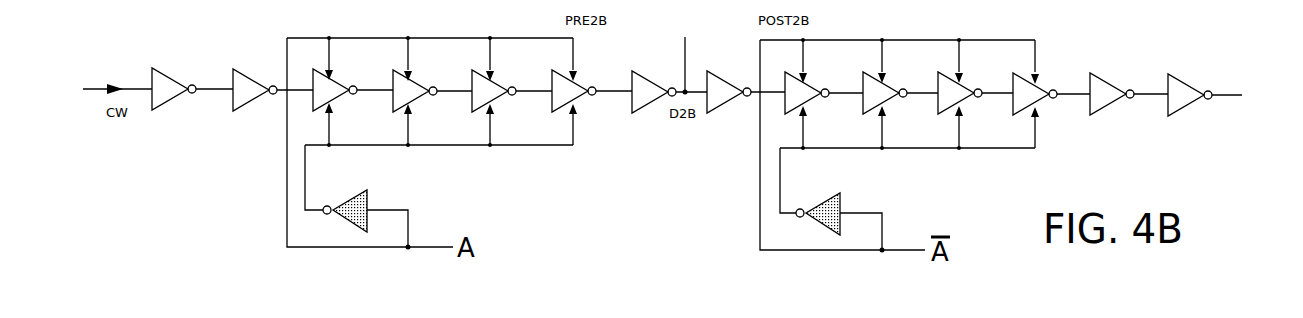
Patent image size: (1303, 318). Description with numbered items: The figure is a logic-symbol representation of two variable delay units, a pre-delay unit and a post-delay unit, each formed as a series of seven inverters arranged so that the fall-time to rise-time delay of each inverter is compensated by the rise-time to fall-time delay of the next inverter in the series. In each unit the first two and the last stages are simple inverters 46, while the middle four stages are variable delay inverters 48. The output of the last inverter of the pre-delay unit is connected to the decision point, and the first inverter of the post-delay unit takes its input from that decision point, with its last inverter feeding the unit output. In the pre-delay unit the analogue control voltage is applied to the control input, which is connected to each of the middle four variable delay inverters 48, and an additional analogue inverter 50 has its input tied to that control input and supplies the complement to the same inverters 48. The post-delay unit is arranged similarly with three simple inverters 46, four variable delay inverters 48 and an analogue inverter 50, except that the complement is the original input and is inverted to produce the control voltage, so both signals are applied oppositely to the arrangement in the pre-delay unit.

The simple inverter 46 is at (683, 85).
The variable delay inverter 48 is at (691, 87).
The analogue inverter 50 is at (650, 203).